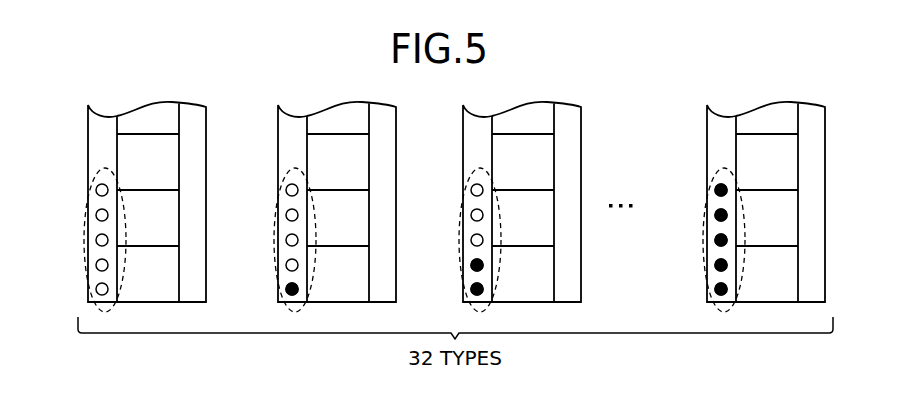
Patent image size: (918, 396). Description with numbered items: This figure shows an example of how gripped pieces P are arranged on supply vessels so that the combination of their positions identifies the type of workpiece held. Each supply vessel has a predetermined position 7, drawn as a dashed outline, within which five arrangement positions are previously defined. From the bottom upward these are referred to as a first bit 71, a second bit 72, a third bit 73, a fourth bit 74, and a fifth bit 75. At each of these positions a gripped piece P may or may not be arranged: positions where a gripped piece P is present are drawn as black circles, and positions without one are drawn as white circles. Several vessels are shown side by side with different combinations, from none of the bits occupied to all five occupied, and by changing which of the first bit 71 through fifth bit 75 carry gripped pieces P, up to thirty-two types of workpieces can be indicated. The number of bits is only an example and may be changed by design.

The predetermined position 7 is at (86, 180).
The first bit 71 is at (93, 289).
The second bit 72 is at (93, 265).
The third bit 73 is at (93, 240).
The fourth bit 74 is at (93, 215).
The fifth bit 75 is at (93, 190).
The gripped piece P is at (299, 289).